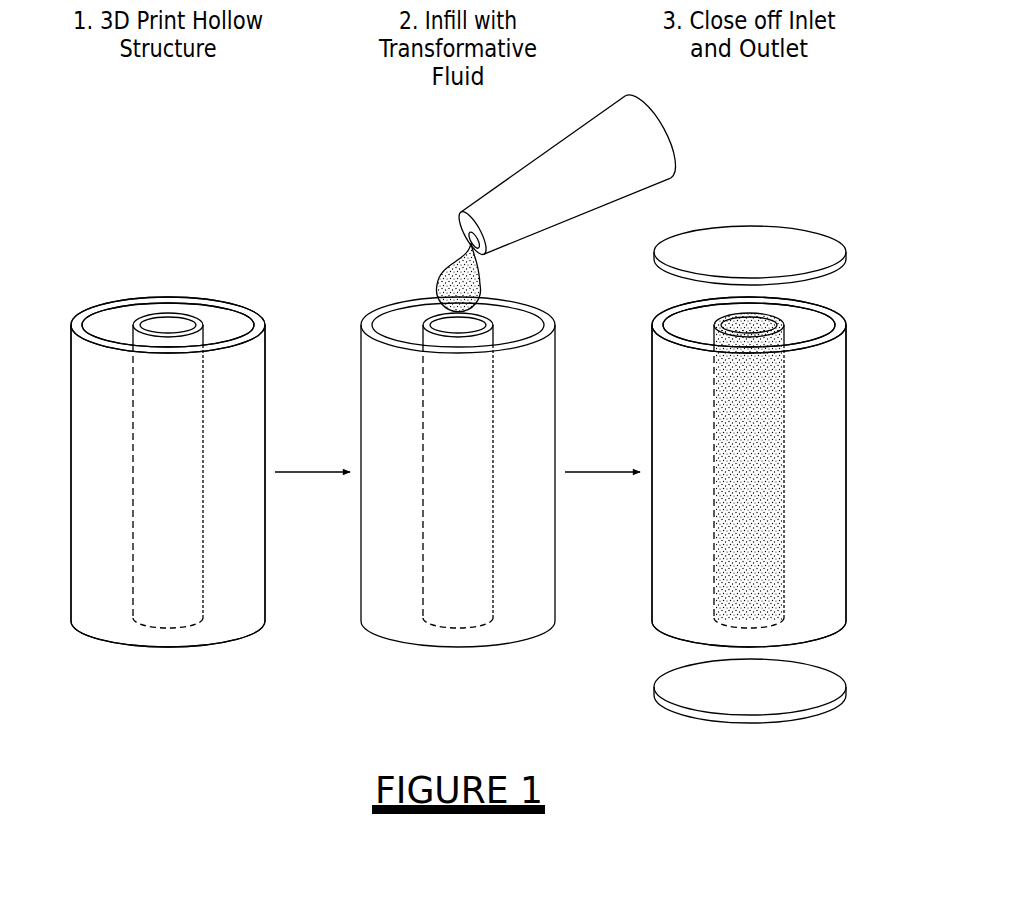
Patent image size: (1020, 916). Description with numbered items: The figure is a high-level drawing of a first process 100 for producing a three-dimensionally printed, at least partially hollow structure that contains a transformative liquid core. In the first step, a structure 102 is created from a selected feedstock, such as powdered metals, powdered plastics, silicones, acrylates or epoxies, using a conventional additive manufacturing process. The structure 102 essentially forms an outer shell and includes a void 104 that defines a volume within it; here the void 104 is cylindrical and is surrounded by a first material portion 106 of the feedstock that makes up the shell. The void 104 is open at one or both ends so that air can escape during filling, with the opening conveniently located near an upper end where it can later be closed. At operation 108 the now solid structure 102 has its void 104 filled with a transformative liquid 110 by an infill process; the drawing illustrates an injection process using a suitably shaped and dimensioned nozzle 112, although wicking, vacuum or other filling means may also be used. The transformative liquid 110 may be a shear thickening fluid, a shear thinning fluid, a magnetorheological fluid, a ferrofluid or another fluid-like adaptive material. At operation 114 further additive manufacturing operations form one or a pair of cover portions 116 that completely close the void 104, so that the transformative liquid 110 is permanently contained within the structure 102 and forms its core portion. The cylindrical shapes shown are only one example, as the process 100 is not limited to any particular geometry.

The first process 100 is at (125, 190).
The 3D structure 102 is at (98, 406).
The void 104 is at (153, 318).
The first material portion 106 is at (215, 302).
The operation 108 is at (438, 175).
The transformative liquid 110 is at (445, 260).
The nozzle 112 is at (628, 157).
The operation 114 is at (847, 407).
The cover portions 116 is at (805, 243).